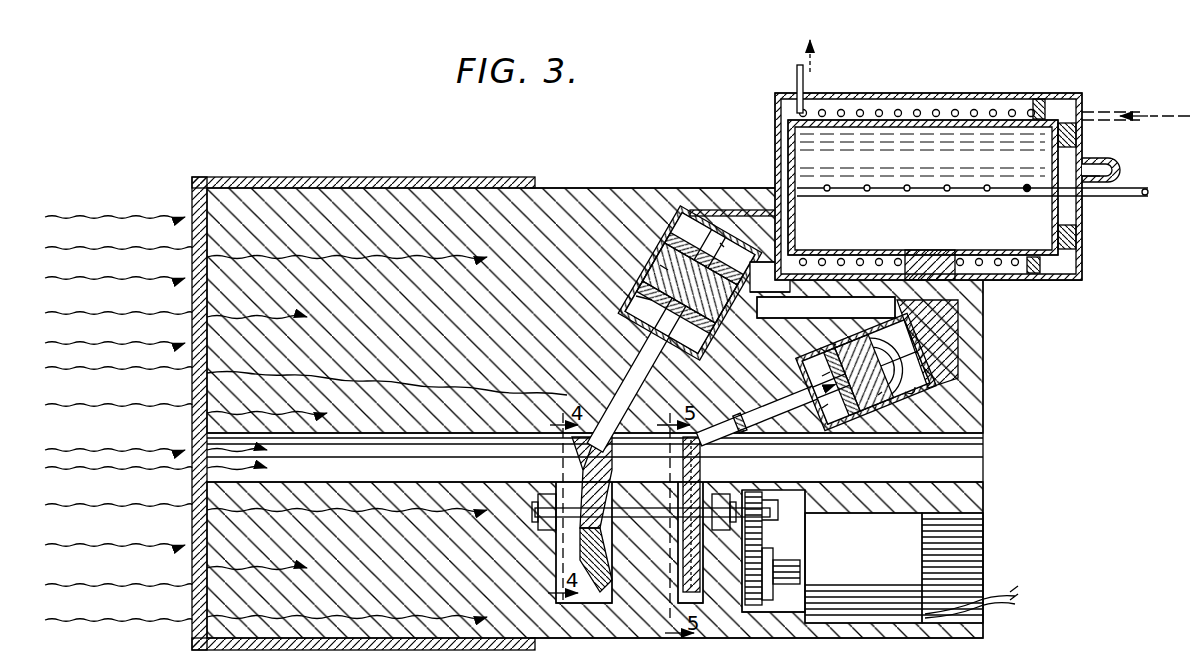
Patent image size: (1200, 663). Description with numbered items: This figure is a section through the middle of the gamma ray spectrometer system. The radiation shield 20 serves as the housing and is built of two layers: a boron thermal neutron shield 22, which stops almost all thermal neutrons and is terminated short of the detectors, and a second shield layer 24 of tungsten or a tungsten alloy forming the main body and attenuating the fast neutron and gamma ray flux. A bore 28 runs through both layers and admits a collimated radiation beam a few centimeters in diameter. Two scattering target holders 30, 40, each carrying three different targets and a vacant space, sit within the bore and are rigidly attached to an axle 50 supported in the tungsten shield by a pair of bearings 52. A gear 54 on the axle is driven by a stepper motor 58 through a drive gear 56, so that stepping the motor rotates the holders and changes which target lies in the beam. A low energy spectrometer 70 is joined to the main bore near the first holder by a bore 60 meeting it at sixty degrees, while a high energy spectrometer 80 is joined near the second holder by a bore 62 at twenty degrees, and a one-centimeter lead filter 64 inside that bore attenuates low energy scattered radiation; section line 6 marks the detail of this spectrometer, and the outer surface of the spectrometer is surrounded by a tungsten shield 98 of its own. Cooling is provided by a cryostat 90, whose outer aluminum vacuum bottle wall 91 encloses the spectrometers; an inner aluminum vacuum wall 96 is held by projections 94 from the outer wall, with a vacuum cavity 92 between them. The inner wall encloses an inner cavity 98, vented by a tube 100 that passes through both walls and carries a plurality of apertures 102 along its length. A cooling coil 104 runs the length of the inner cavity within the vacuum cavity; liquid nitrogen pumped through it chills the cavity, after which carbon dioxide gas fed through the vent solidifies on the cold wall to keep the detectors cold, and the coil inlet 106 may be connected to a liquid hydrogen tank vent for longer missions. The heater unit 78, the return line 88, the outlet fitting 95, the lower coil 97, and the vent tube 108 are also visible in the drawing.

The section line 6- 6 is at (822, 376).
The radiation shield 20 is at (595, 390).
The thermal neutron shield 22 is at (240, 182).
The second shield layer 24 is at (417, 312).
The bore 28 is at (320, 476).
The scattering target holder 30 is at (560, 520).
The scattering target holder 40 is at (690, 560).
The axle 50 is at (624, 506).
The bearings 52 is at (546, 494).
The gear 54 is at (766, 500).
The drive gear 56 is at (767, 588).
The stepper motor 58 is at (850, 564).
The bore 60 is at (632, 361).
The bore 62 is at (805, 420).
The lead filter 64 is at (735, 430).
The low energy spectrometer 70 is at (689, 259).
The heater unit 78 is at (1007, 298).
The high energy spectrometer 80 is at (914, 371).
The return line 88 is at (948, 390).
The cryostat 90 is at (936, 94).
The outer aluminum vacuum bottle wall 91 is at (897, 110).
The vacuum cavity 92 is at (1040, 102).
The projections 94 is at (1078, 127).
The outlet fitting 95 is at (1112, 178).
The inner aluminum vacuum wall 96 is at (1118, 164).
The lower heating coil 97 is at (800, 260).
The inner cavity 98 is at (960, 334).
The tube 100 is at (1130, 198).
The apertures 102 is at (1026, 192).
The cooling coil 104 is at (985, 109).
The inlet 106 is at (1104, 110).
The vent tube 108 is at (795, 85).